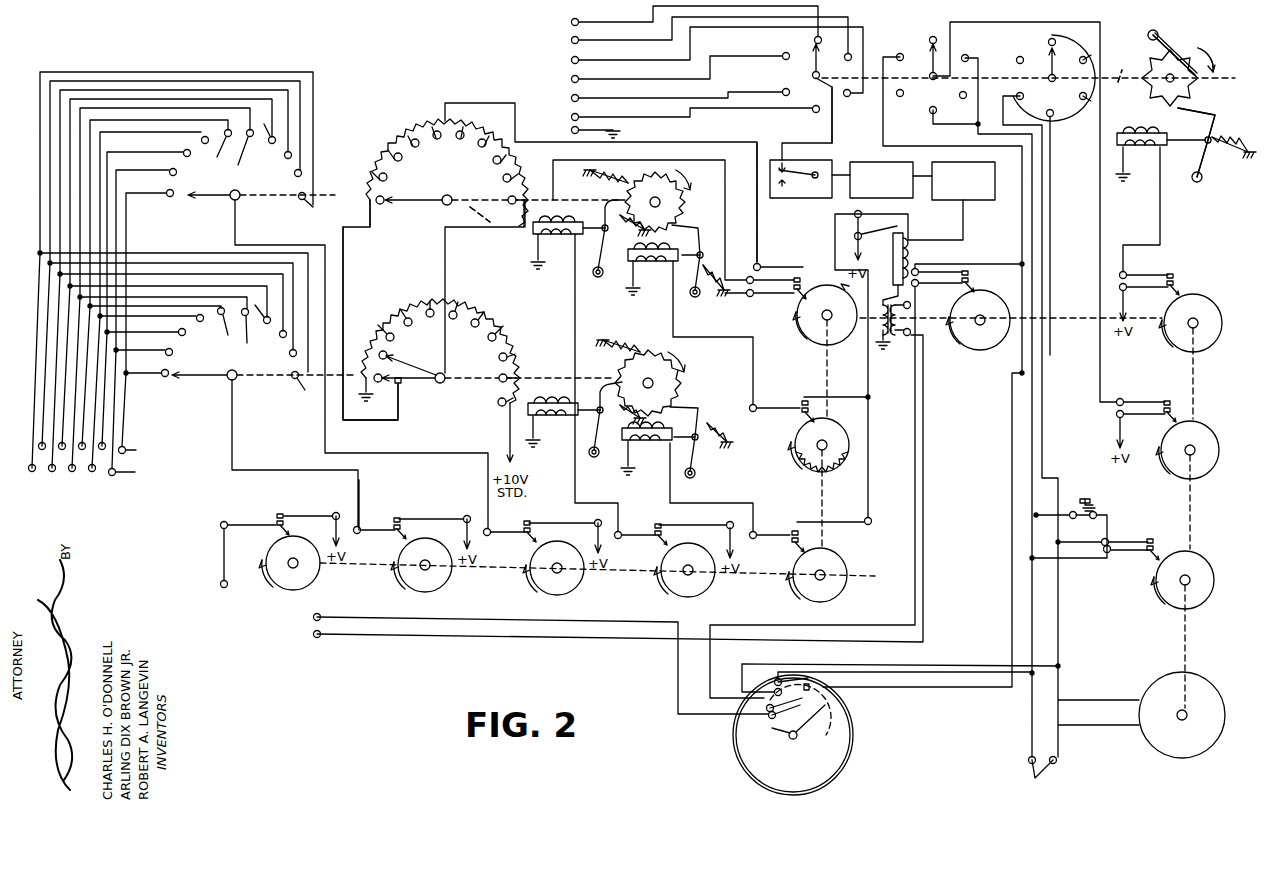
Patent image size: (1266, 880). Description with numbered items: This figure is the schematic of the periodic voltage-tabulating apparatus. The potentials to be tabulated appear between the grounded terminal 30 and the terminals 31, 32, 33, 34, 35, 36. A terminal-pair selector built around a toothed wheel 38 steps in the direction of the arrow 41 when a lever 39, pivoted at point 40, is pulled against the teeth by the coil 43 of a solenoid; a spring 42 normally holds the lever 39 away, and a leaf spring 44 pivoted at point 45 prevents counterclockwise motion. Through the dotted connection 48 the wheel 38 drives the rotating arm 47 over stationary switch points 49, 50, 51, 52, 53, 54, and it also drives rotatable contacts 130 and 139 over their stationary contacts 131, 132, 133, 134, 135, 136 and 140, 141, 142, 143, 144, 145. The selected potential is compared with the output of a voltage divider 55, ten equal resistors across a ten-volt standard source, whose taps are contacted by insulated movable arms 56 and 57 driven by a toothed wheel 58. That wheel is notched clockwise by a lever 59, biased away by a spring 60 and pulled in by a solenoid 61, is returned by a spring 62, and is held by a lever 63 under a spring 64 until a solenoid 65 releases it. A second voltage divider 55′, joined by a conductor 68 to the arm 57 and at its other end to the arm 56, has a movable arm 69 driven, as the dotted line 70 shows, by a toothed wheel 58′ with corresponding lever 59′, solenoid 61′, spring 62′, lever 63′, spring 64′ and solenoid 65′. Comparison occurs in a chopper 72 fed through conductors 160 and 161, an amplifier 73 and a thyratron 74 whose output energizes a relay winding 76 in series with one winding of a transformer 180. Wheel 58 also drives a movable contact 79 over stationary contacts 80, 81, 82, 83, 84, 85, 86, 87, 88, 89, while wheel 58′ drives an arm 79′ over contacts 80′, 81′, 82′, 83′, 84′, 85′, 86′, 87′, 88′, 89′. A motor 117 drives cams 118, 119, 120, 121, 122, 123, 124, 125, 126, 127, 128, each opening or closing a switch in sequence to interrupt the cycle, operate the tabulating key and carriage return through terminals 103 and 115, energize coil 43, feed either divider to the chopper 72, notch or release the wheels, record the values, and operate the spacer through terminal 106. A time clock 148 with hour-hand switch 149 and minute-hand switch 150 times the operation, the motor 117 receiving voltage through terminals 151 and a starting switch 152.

The grounded terminal 30 is at (571, 131).
The terminal 31 is at (571, 118).
The terminal 32 is at (571, 99).
The terminal 33 is at (571, 80).
The terminal 34 is at (571, 61).
The terminal 35 is at (571, 41).
The terminal 36 is at (571, 23).
The toothed wheel 38 is at (1200, 84).
The lever 39 is at (1204, 165).
The pivot point 40 is at (1199, 182).
The arrow 41 is at (1212, 62).
The spring 42 is at (1230, 138).
The coil 43 is at (1147, 148).
The leaf spring 44 is at (1178, 48).
The pivot point 45 is at (1156, 31).
The rotation arm 47 is at (812, 76).
The dotted connection 48 is at (1116, 66).
The stationary switch point 49 is at (814, 41).
The stationary switch point 50 is at (846, 55).
The stationary switch point 51 is at (849, 96).
The stationary switch point 52 is at (813, 112).
The stationary switch point 53 is at (790, 92).
The stationary switch point 54 is at (783, 59).
The voltage divider 55 is at (440, 352).
The voltage divider 55′ is at (447, 173).
The movable contact arm 56 is at (420, 360).
The movable contact arm 57 is at (400, 384).
The toothed wheel 58 is at (680, 382).
The toothed wheel 58′ is at (670, 201).
The lever 59 is at (700, 416).
The lever 59′ is at (699, 236).
The spring 60 is at (715, 292).
The solenoid 61 is at (655, 445).
The solenoid 61′ is at (662, 262).
The spring 62 is at (625, 345).
The spring 62′ is at (618, 176).
The lever 63 is at (601, 385).
The lever 63′ is at (604, 208).
The spring 64 is at (624, 415).
The spring 64′ is at (628, 233).
The solenoid 65 is at (560, 418).
The solenoid 65′ is at (565, 236).
The conductor 68 is at (345, 258).
The movable arm 69 is at (420, 201).
The dotted line 70 is at (489, 217).
The chopper 72 is at (818, 158).
The amplifier 73 is at (916, 196).
The thyratron 74 is at (993, 198).
The solenoid 76 is at (906, 252).
The movable switch contact 79 is at (208, 378).
The rotatable contact arm 79′ is at (212, 200).
The stationary contact 80 is at (163, 377).
The stationary contact 80′ is at (167, 198).
The stationary contact 81 is at (173, 354).
The stationary contact 81′ is at (176, 174).
The stationary contact 82 is at (186, 335).
The stationary contact 82′ is at (183, 155).
The stationary contact 83 is at (196, 317).
The stationary contact 83′ is at (201, 140).
The stationary contact 84 is at (149, 410).
The stationary contact 84′ is at (219, 147).
The stationary contact 85 is at (149, 402).
The stationary contact 85′ is at (241, 156).
The stationary contact 86 is at (155, 401).
The stationary contact 86′ is at (263, 127).
The stationary contact 87 is at (280, 336).
The stationary contact 87′ is at (284, 156).
The stationary contact 88 is at (290, 356).
The stationary contact 88′ is at (294, 175).
The stationary contact 89 is at (171, 433).
The stationary contact 89′ is at (316, 208).
The terminal 103 is at (313, 636).
The terminal 106 is at (220, 583).
The terminal 115 is at (313, 619).
The motor 117 is at (1172, 750).
The cam 118 is at (1178, 605).
The cam 119 is at (1180, 475).
The cam 120 is at (1180, 345).
The cam 121 is at (972, 345).
The cam 122 is at (812, 338).
The cam 123 is at (808, 468).
The cam 124 is at (808, 595).
The cam 125 is at (692, 590).
The cam 126 is at (556, 590).
The cam 127 is at (428, 588).
The cam 128 is at (296, 588).
The rotatable switch contact 130 is at (1048, 72).
The stationary contact 131 is at (1049, 40).
The stationary contact 132 is at (1084, 56).
The stationary contact 133 is at (1084, 100).
The stationary contact 134 is at (1052, 117).
The stationary contact 135 is at (1024, 96).
The stationary contact 136 is at (1016, 61).
The rotatable switch contact 139 is at (930, 72).
The stationary contact 140 is at (933, 36).
The stationary contact 141 is at (968, 55).
The stationary contact 142 is at (961, 98).
The stationary contact 143 is at (930, 113).
The stationary contact 144 is at (901, 97).
The stationary contact 145 is at (897, 55).
The time clock 148 is at (850, 757).
The switch device 149 is at (768, 716).
The switch device 150 is at (825, 684).
The pair of terminals 151 is at (1036, 778).
The starting switch 152 is at (1090, 505).
The conductor 160 is at (834, 128).
The conductor 161 is at (759, 229).
The transformer 180 is at (886, 345).